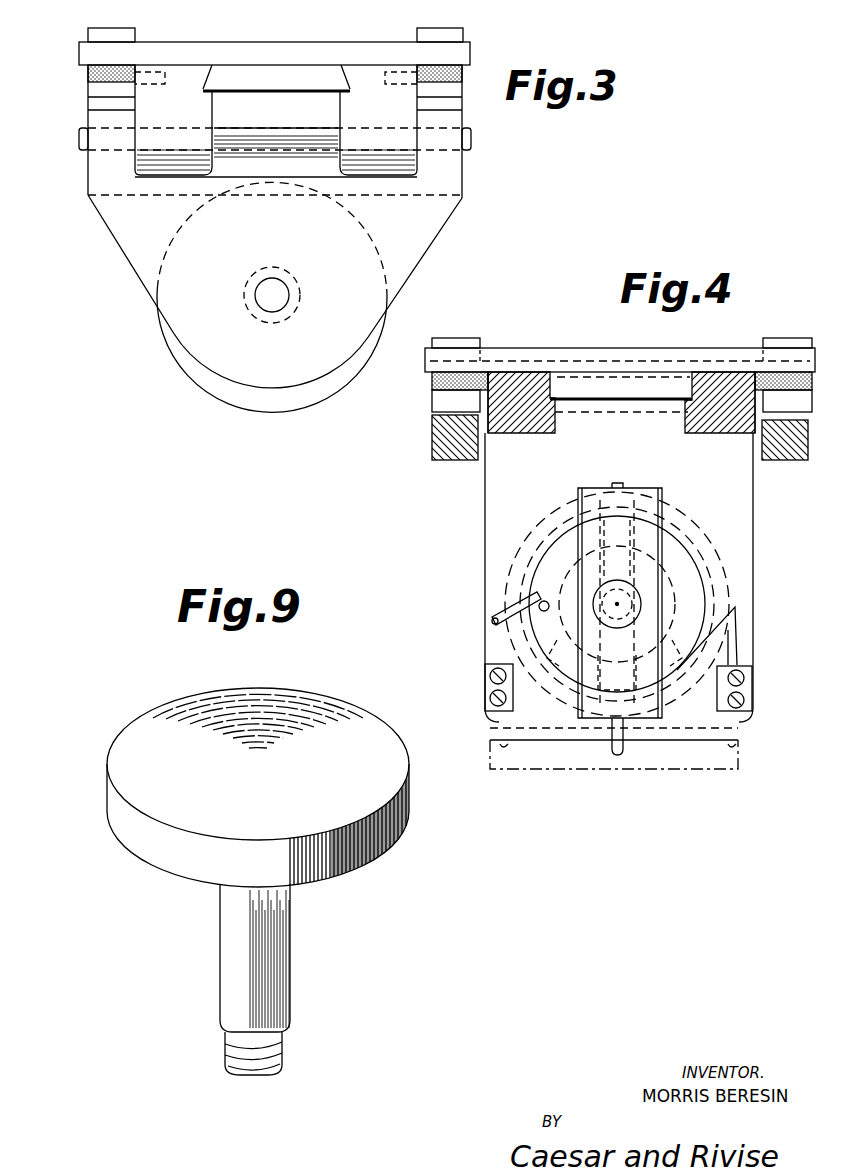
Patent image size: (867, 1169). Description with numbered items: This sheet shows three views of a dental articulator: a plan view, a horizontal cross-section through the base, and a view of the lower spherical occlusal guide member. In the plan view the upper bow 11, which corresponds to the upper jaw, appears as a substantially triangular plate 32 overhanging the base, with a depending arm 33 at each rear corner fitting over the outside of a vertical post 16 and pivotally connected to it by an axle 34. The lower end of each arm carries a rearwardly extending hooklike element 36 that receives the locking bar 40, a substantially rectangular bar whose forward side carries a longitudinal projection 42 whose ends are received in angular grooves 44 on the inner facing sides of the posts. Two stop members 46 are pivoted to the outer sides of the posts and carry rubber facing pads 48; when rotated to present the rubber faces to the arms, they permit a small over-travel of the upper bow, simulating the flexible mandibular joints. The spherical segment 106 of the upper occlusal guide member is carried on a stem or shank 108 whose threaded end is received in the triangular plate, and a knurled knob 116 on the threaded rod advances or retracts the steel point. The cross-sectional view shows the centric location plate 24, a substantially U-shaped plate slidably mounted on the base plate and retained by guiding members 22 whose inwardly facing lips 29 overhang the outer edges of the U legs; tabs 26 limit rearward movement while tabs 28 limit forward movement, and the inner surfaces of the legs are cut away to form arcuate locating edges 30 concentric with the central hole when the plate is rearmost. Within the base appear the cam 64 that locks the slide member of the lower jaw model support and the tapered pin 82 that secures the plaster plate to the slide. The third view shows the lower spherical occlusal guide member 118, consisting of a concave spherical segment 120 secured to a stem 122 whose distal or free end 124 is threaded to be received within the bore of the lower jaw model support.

In FIG. 3, the upper bow 11 is at (142, 275).
In FIG. 4, the vertical post 16 is at (502, 375).
In FIG. 4, the guiding member 22 is at (488, 693).
In FIG. 4, the centric location plate 24 is at (678, 742).
In FIG. 4, the tab 26 is at (502, 727).
In FIG. 4, the tab 28 is at (537, 600).
In FIG. 4, the inwardly facing lip 29 is at (510, 706).
In FIG. 4, the locating edge 30 is at (555, 665).
In FIG. 3, the triangular plate 32 is at (195, 323).
In FIG. 4, the depending arm 33 is at (435, 450).
In FIG. 3, the axle 34 is at (262, 120).
In FIG. 3, the hooklike element 36 is at (88, 36).
In FIG. 4, the hooklike element 36 is at (443, 343).
In FIG. 3, the locking bar 40 is at (370, 53).
In FIG. 4, the locking bar 40 is at (698, 355).
In FIG. 3, the longitudinal projection 42 is at (312, 87).
In FIG. 4, the longitudinal projection 42 is at (600, 390).
In FIG. 4, the angular groove 44 is at (548, 393).
In FIG. 3, the stop member 46 is at (100, 92).
In FIG. 4, the stop member 46 is at (440, 398).
In FIG. 3, the rubber facing pad 48 is at (90, 73).
In FIG. 4, the rubber facing pad 48 is at (432, 382).
In FIG. 4, the cam 64 is at (530, 560).
In FIG. 4, the tapered pin 82 is at (619, 756).
In FIG. 3, the segment of a sphere 106 is at (228, 392).
In FIG. 3, the stem or shank 108 is at (293, 315).
In FIG. 3, the knurled knob 116 is at (278, 290).
In FIG. 9, the lower spherical occlusal guide member 118 is at (292, 922).
In FIG. 9, the concave spherical segment 120 is at (133, 851).
In FIG. 9, the stem 122 is at (284, 995).
In FIG. 9, the distal or free end 124 is at (227, 1050).